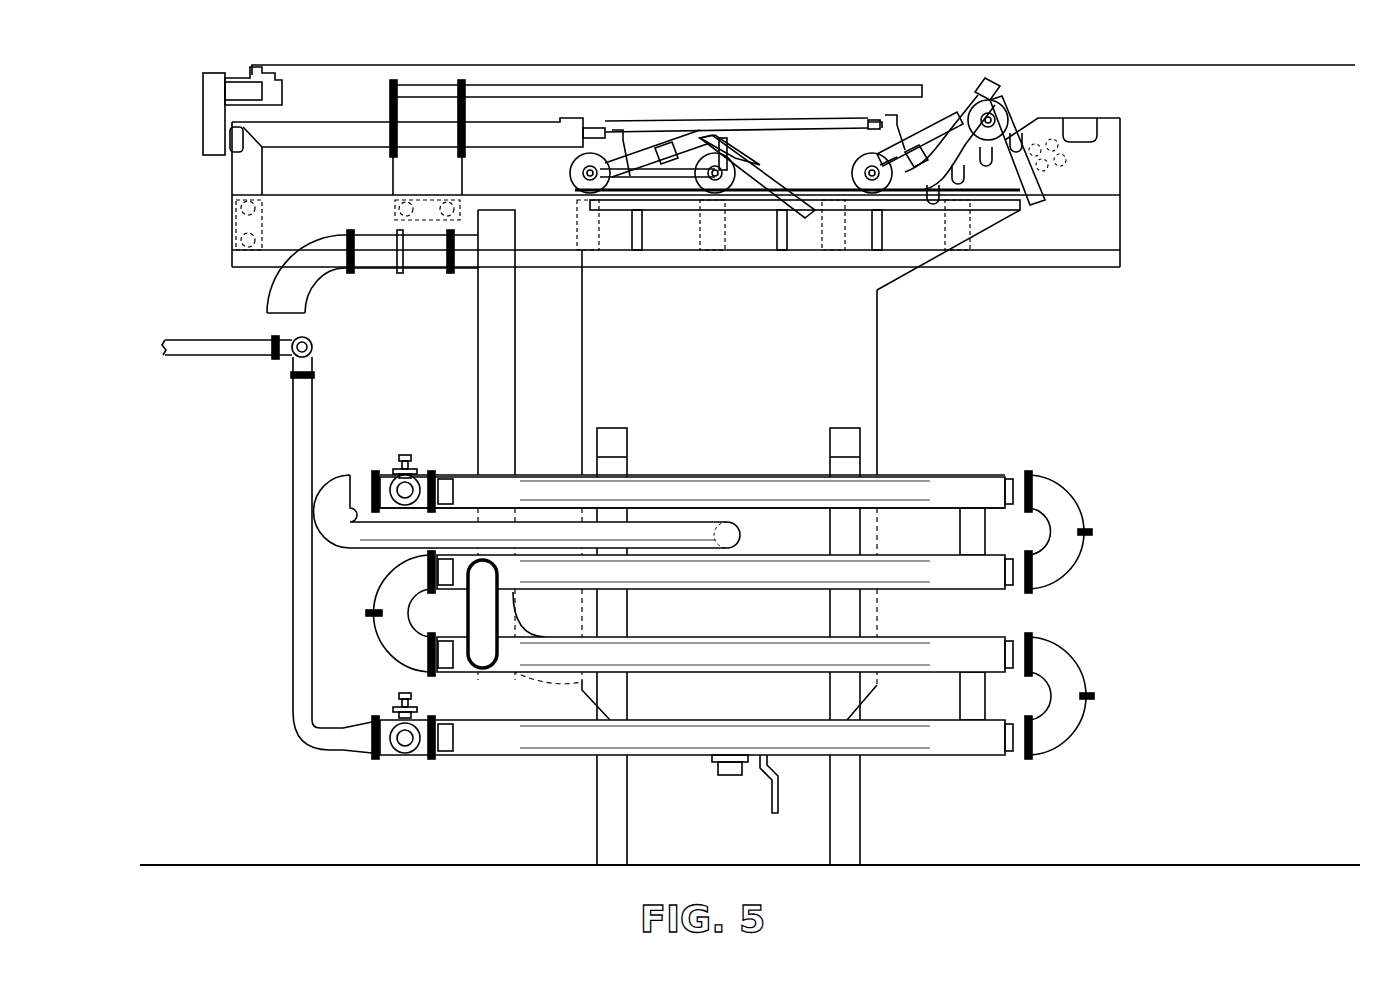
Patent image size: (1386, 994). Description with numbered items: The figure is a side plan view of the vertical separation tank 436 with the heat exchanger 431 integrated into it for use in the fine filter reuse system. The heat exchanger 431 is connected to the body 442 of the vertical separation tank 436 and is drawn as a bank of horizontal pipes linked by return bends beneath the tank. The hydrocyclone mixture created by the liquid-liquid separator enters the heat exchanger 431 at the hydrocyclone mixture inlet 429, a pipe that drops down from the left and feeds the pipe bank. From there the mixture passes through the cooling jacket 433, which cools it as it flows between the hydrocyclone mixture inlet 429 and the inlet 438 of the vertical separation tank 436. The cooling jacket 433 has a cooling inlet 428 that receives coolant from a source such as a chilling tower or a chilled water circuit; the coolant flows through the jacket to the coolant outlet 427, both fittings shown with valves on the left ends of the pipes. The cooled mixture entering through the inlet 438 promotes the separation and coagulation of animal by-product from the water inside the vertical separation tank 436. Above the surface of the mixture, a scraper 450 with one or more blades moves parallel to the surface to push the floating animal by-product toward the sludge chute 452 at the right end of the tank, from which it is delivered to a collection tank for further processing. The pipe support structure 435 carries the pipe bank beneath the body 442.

The coolant outlet 427 is at (405, 488).
The cooling inlet 428 is at (405, 742).
The hydrocyclone mixture inlet 429 is at (205, 357).
The heat exchanger 431 is at (1097, 473).
The cooling jacket 433 is at (958, 486).
The lower pipe section 435 is at (538, 772).
The vertical separation tank 436 is at (779, 152).
The inlet 438 is at (330, 478).
The body 442 is at (877, 372).
The scraper 450 is at (658, 112).
The sludge chute 452 is at (1128, 196).